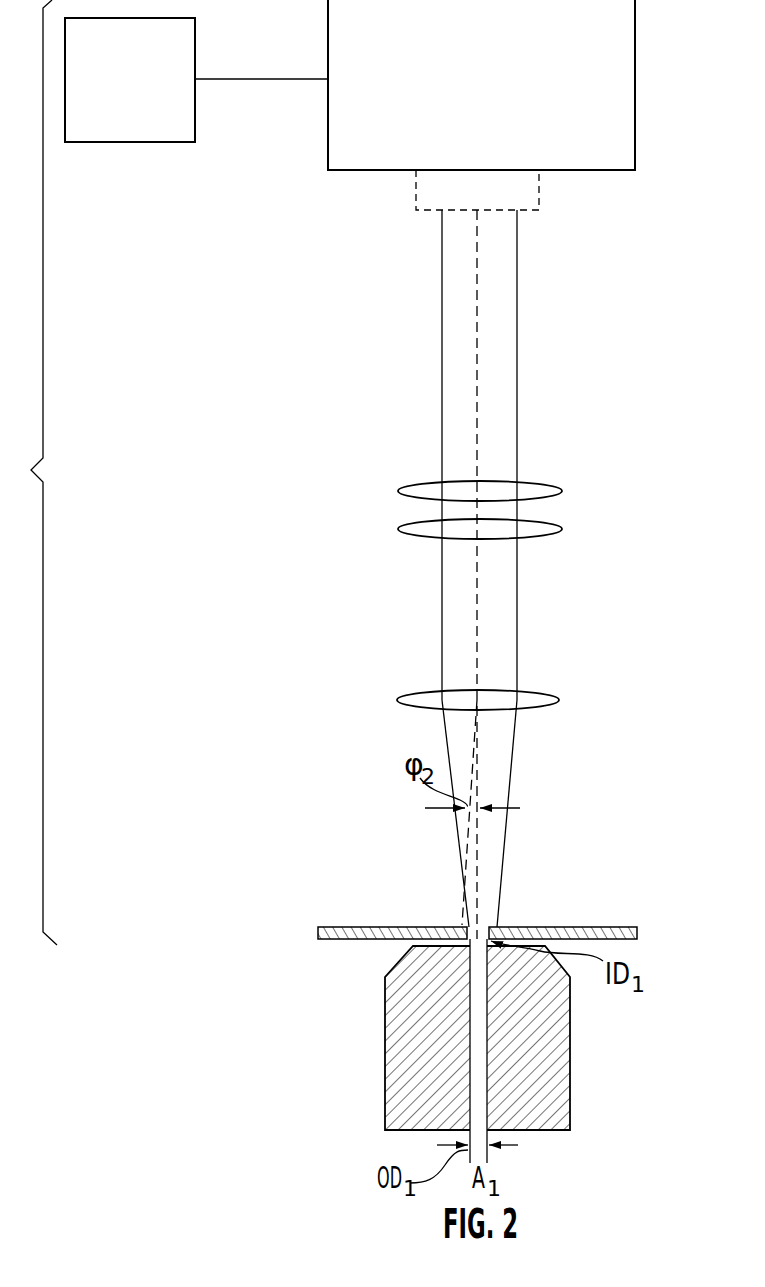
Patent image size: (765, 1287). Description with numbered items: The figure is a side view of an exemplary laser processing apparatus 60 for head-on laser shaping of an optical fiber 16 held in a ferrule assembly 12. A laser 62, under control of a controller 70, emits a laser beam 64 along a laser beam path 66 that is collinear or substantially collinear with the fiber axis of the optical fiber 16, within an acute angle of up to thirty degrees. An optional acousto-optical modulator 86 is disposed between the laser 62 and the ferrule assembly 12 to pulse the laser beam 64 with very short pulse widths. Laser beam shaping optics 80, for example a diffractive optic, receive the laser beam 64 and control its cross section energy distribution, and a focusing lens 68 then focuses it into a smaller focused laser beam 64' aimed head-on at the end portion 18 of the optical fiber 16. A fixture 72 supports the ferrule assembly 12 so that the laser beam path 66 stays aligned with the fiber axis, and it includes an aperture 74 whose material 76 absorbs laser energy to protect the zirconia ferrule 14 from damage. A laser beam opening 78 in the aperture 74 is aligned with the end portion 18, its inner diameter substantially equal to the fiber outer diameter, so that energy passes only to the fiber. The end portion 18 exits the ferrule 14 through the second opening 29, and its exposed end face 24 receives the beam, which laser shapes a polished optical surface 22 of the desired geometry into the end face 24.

The ferrule assembly 12 is at (360, 1003).
The ferrule 14 is at (548, 1092).
The optical fiber 16 is at (466, 1024).
The end portion 18 is at (462, 953).
The optical surface 22 is at (487, 940).
The end face 24 is at (483, 918).
The second opening 29 is at (492, 958).
The laser processing apparatus 60 is at (30, 472).
The laser 62 is at (483, 95).
The laser beam 64 is at (511, 455).
The focused laser beam 64' is at (512, 813).
The laser beam path 66 is at (477, 303).
The focusing lens 68 is at (412, 692).
The controller 70 is at (138, 95).
The fixture 72 is at (675, 922).
The aperture 74 is at (355, 925).
The material 76 is at (584, 927).
The laser beam opening 78 is at (466, 920).
The laser beam shaping optic 80 is at (390, 470).
The acousto-optical modulator 86 is at (539, 197).